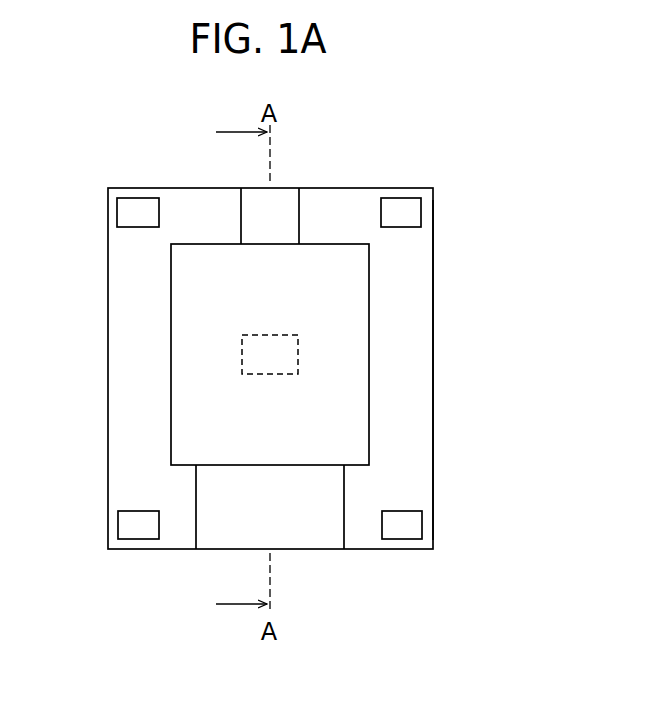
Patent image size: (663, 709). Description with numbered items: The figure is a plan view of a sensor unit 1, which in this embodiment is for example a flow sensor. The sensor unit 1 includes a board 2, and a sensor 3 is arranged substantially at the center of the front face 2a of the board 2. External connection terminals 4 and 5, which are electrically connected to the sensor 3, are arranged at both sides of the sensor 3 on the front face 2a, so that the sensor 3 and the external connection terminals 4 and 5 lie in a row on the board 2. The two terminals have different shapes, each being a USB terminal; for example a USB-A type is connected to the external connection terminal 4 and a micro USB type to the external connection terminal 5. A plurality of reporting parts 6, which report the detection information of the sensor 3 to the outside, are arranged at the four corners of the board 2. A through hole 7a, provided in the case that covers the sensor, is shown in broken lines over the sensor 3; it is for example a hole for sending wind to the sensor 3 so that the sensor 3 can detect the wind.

The sensor unit 1 is at (455, 177).
The board 2 is at (433, 330).
The front face of the board 2a is at (420, 289).
The sensor 3 is at (197, 294).
The external connection terminal 4 is at (300, 537).
The external connection terminal 5 is at (289, 200).
The reporting part 6 is at (131, 205).
The through hole 7a is at (298, 350).